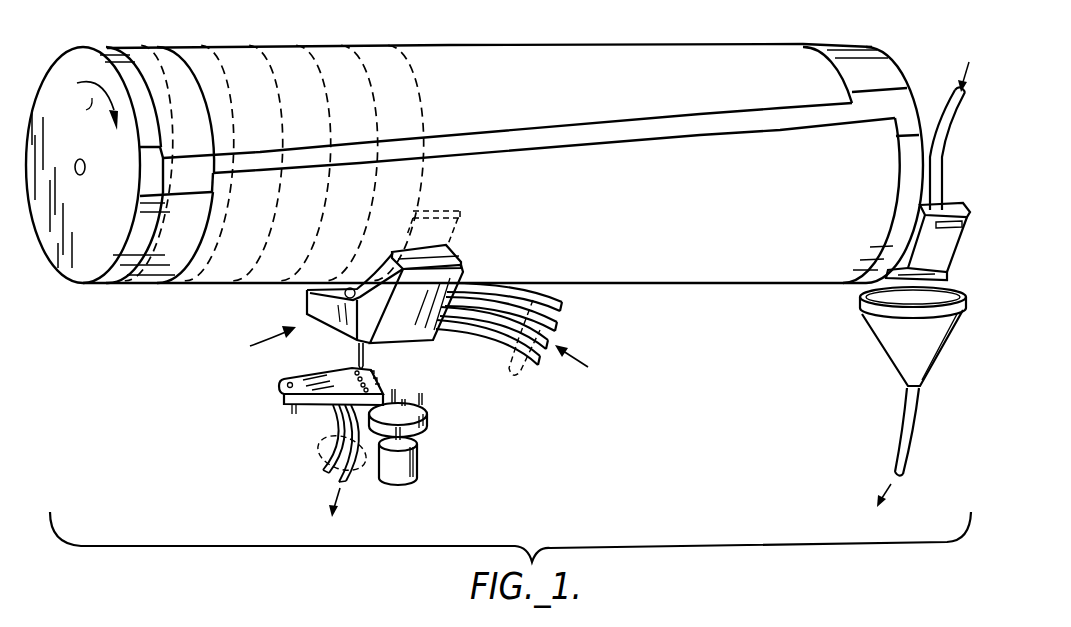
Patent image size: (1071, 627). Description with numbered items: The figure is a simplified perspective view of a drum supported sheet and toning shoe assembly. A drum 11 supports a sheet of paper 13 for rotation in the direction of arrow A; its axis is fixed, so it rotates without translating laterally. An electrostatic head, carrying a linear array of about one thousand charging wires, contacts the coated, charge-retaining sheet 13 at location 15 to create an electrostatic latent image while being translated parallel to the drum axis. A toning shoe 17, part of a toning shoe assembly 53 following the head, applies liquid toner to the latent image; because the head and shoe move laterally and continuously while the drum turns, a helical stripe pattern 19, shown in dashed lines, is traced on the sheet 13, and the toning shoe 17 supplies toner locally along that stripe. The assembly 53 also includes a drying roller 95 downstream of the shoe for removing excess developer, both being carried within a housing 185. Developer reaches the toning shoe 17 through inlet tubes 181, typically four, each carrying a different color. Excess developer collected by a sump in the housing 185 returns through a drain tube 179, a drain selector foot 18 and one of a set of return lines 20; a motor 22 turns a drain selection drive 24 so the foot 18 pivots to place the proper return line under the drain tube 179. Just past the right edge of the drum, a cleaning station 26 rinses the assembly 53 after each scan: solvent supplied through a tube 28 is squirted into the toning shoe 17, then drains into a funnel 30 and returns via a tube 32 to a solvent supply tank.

The drum 11 is at (62, 62).
The sheet of paper 13 is at (633, 275).
The location of electrostatic head contact 15 is at (443, 200).
The toning shoe 17 is at (447, 247).
The drain selector foot 18 is at (303, 405).
The helical stripe pattern 19 is at (200, 285).
The return lines 20 is at (313, 438).
The motor 22 is at (420, 460).
The drain selection drive 24 is at (428, 414).
The cleaning station 26 is at (933, 247).
The tube 28 is at (947, 95).
The funnel 30 is at (890, 337).
The tube 32 is at (906, 423).
The toning shoe assembly 53 is at (253, 343).
The drying roller 95 is at (312, 298).
The drain tube 179 is at (358, 352).
The inlet tubes 181 is at (520, 373).
The housing 185 is at (427, 343).